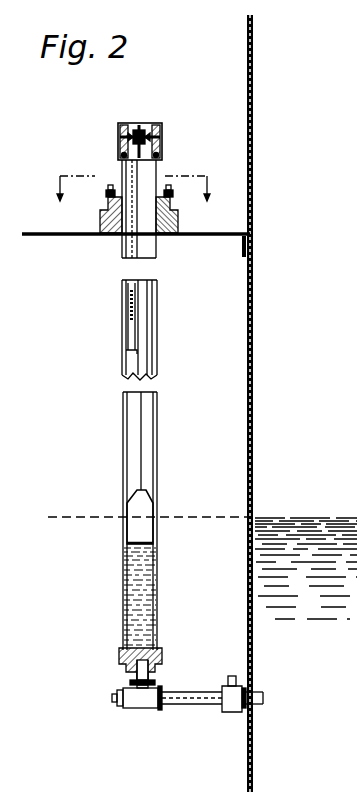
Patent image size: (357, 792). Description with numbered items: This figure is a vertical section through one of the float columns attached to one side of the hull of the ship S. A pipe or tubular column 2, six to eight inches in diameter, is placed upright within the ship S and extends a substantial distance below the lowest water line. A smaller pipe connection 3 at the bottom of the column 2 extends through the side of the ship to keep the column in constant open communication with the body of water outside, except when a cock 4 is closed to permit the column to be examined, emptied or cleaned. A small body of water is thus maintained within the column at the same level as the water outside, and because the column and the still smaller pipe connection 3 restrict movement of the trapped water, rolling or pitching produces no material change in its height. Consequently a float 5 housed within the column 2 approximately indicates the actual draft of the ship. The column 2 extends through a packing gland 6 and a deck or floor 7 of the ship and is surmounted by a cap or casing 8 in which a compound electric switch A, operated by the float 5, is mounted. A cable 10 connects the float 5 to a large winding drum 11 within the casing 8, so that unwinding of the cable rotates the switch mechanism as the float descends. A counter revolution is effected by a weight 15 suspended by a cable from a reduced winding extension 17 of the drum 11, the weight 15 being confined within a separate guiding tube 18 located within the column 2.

The compound electric switch A is at (140, 129).
The ship S is at (255, 432).
The tubular column 2 is at (158, 433).
The pipe connection 3 is at (163, 692).
The cock 4 is at (228, 710).
The float 5 is at (153, 508).
The packing gland 6 is at (102, 212).
The deck 7 is at (80, 236).
The cap or casing 8 is at (165, 140).
The cable 10 is at (142, 408).
The winding drum 11 is at (143, 126).
The weight 15 is at (125, 310).
The reduced winding extension 17 is at (118, 135).
The guiding tube 18 is at (140, 333).